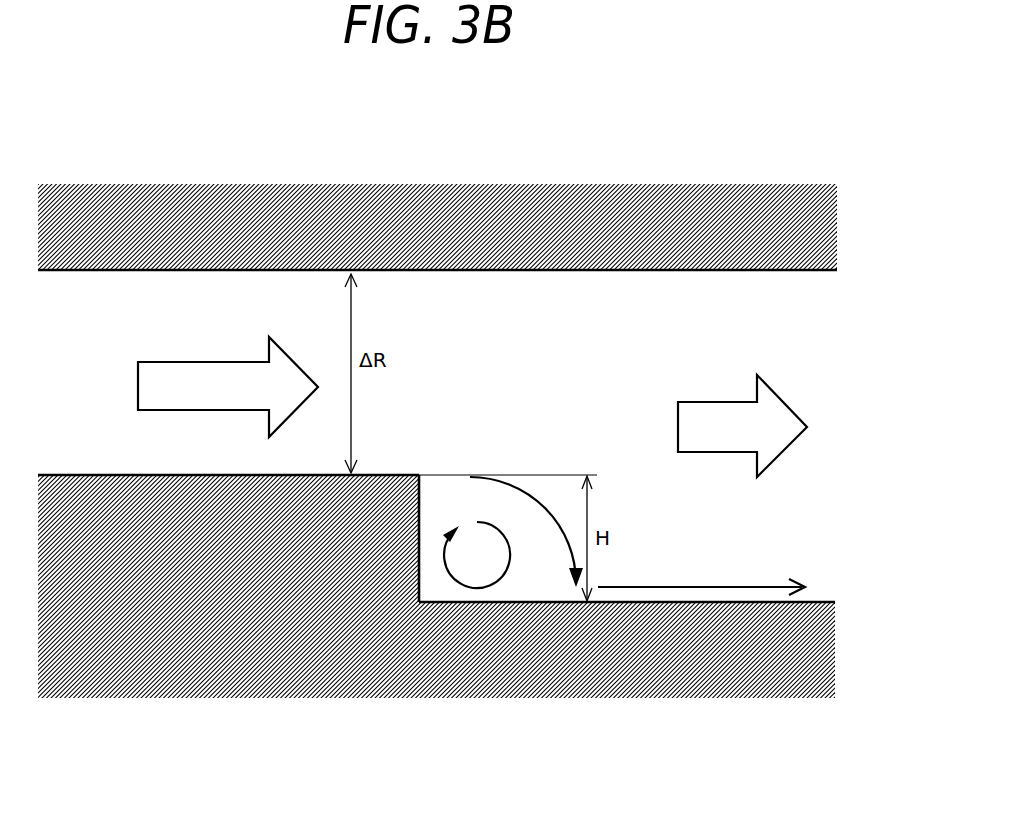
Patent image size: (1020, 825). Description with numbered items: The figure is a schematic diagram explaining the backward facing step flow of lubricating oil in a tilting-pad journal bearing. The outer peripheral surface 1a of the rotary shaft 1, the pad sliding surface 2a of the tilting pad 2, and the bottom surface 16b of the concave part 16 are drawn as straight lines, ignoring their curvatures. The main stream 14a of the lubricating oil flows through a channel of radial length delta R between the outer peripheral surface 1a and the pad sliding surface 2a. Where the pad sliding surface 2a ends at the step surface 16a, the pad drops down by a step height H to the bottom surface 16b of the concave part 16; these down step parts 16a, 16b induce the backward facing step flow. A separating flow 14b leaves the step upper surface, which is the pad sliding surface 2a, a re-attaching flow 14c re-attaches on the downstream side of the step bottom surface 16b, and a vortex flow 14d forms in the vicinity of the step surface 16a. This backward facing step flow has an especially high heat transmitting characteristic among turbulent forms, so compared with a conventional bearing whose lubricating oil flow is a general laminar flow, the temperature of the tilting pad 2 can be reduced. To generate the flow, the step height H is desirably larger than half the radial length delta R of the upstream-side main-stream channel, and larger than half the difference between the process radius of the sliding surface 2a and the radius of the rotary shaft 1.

The rotary shaft 1 is at (744, 183).
The outer peripheral surface 1a is at (700, 271).
The tilting pad 2 is at (160, 685).
The pad sliding surface 2a is at (69, 474).
The main stream 14a is at (195, 361).
The separating flow 14b is at (528, 490).
The re-attaching flow 14c is at (668, 592).
The vortex flow 14d is at (455, 578).
The concave part 16 is at (688, 523).
The step surface 16a is at (430, 502).
The bottom surface 16b is at (817, 601).